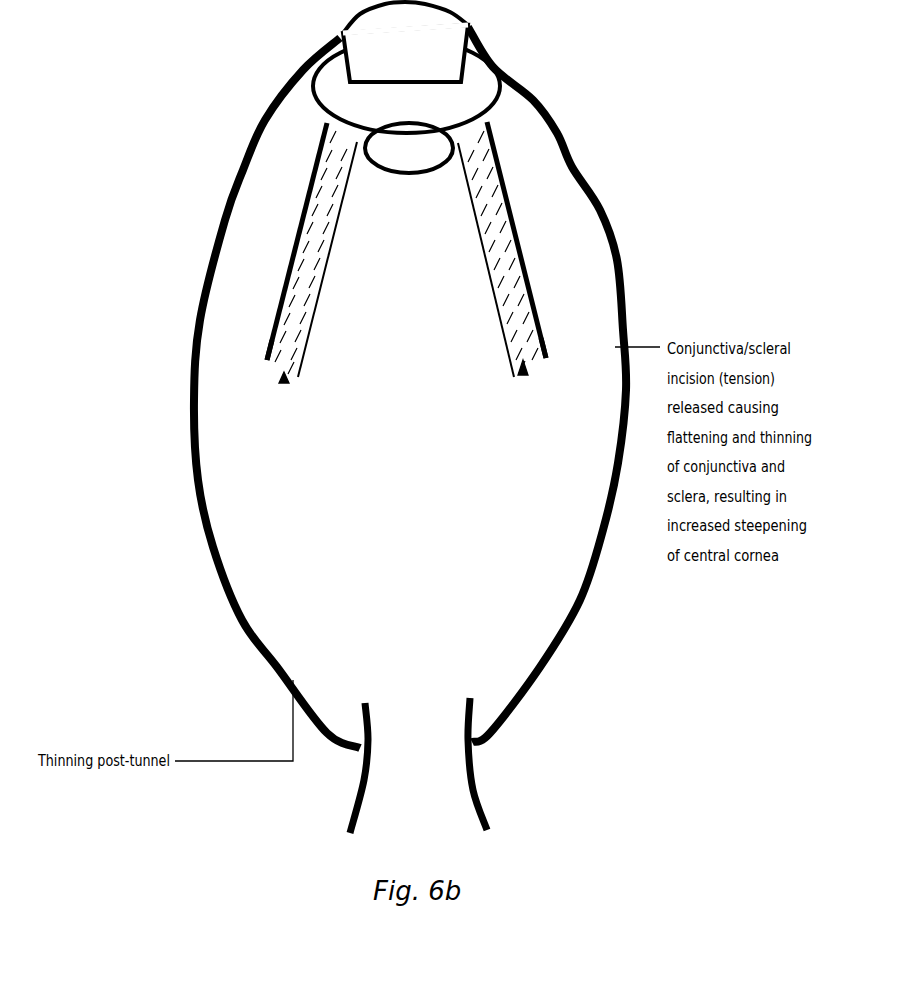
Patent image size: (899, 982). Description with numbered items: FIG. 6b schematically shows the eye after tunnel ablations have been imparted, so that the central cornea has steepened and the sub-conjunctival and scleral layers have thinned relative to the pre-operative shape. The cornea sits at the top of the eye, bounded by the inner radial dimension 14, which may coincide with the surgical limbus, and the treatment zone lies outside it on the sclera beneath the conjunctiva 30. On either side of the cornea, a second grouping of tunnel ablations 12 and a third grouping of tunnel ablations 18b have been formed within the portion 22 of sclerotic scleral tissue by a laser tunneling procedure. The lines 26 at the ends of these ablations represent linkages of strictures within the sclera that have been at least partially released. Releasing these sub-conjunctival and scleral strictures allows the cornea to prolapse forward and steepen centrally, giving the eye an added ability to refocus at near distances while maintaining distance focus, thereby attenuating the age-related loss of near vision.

The second grouping of tunnel ablations 12 is at (477, 221).
The inner radial dimension 14 is at (497, 92).
The third grouping of tunnel ablations 18b is at (291, 253).
The portion of scleral tissue 22 is at (285, 382).
The lines representing linkages of strictures 26 is at (277, 365).
The conjunctiva 30 is at (618, 261).